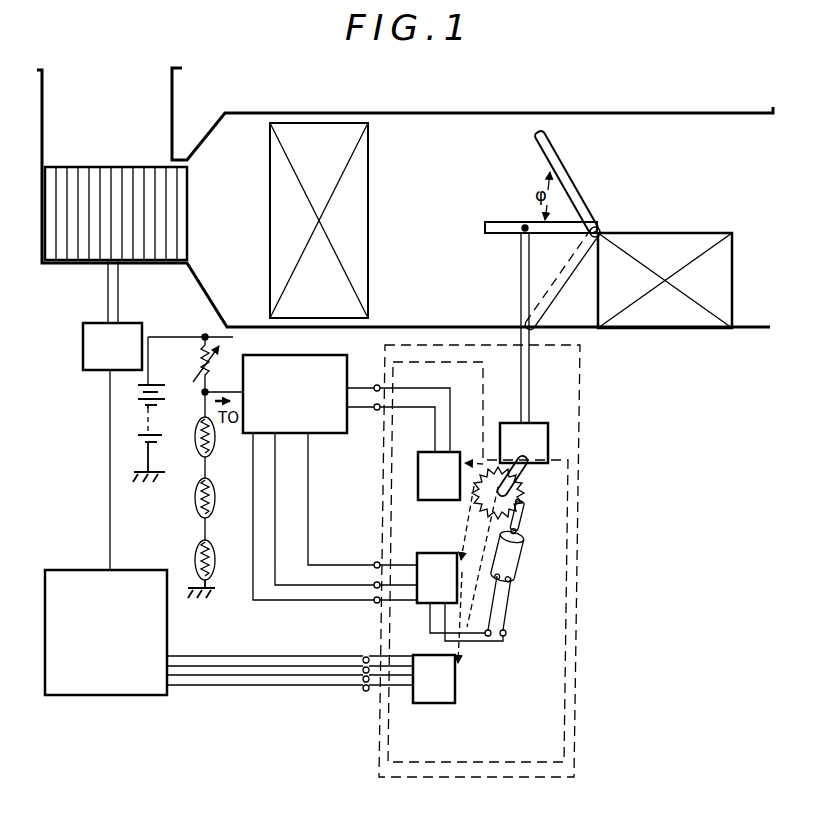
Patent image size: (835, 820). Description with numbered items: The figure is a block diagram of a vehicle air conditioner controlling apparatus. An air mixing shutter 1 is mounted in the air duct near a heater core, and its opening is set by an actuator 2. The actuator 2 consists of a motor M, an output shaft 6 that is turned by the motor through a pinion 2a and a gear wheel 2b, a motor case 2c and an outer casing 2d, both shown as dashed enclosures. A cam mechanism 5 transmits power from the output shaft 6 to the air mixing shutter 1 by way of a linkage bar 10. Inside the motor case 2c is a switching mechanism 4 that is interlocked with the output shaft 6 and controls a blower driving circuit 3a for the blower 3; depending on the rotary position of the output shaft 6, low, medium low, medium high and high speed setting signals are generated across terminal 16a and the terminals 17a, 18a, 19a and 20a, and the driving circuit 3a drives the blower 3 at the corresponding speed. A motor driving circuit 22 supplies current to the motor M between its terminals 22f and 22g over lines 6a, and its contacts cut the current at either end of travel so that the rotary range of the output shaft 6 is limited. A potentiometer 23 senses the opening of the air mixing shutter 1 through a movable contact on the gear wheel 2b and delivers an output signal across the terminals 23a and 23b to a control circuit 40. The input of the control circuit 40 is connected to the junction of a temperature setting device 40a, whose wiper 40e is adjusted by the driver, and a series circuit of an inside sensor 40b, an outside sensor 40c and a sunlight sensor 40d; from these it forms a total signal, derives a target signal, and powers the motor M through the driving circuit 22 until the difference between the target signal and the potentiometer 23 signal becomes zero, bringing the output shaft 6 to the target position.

The air mixing shutter 1 is at (495, 237).
The actuator 2 is at (580, 521).
The pinion 2a is at (531, 511).
The gear wheel 2b is at (526, 491).
The motor case 2c is at (566, 618).
The outer casing 2d is at (580, 386).
The blower 3 is at (70, 262).
The blower driving circuit 3a is at (107, 688).
The switching mechanism 4 is at (435, 705).
The cam mechanism 5 is at (548, 443).
The output shaft 6 is at (528, 467).
The motor lead wires 6a is at (455, 608).
The linkage bar 10 is at (521, 300).
The terminal 16a is at (375, 602).
The terminal 17a is at (364, 658).
The terminal 18a is at (362, 673).
The terminal 19a is at (363, 683).
The terminal 20a is at (365, 692).
The motor driving circuit 22 is at (437, 553).
The terminal 22f is at (376, 563).
The terminal 22g is at (375, 585).
The potentiometer 23 is at (455, 458).
The slide contact 23a is at (377, 385).
The resistor 23b is at (377, 410).
The control circuit 40 is at (245, 429).
The temperature setting device 40a is at (180, 364).
The inside sensor 40b is at (197, 432).
The outside sensor 40c is at (194, 495).
The sunlight sensor 40d is at (192, 573).
The resistor wiper 40e is at (195, 346).
The motor M is at (516, 561).